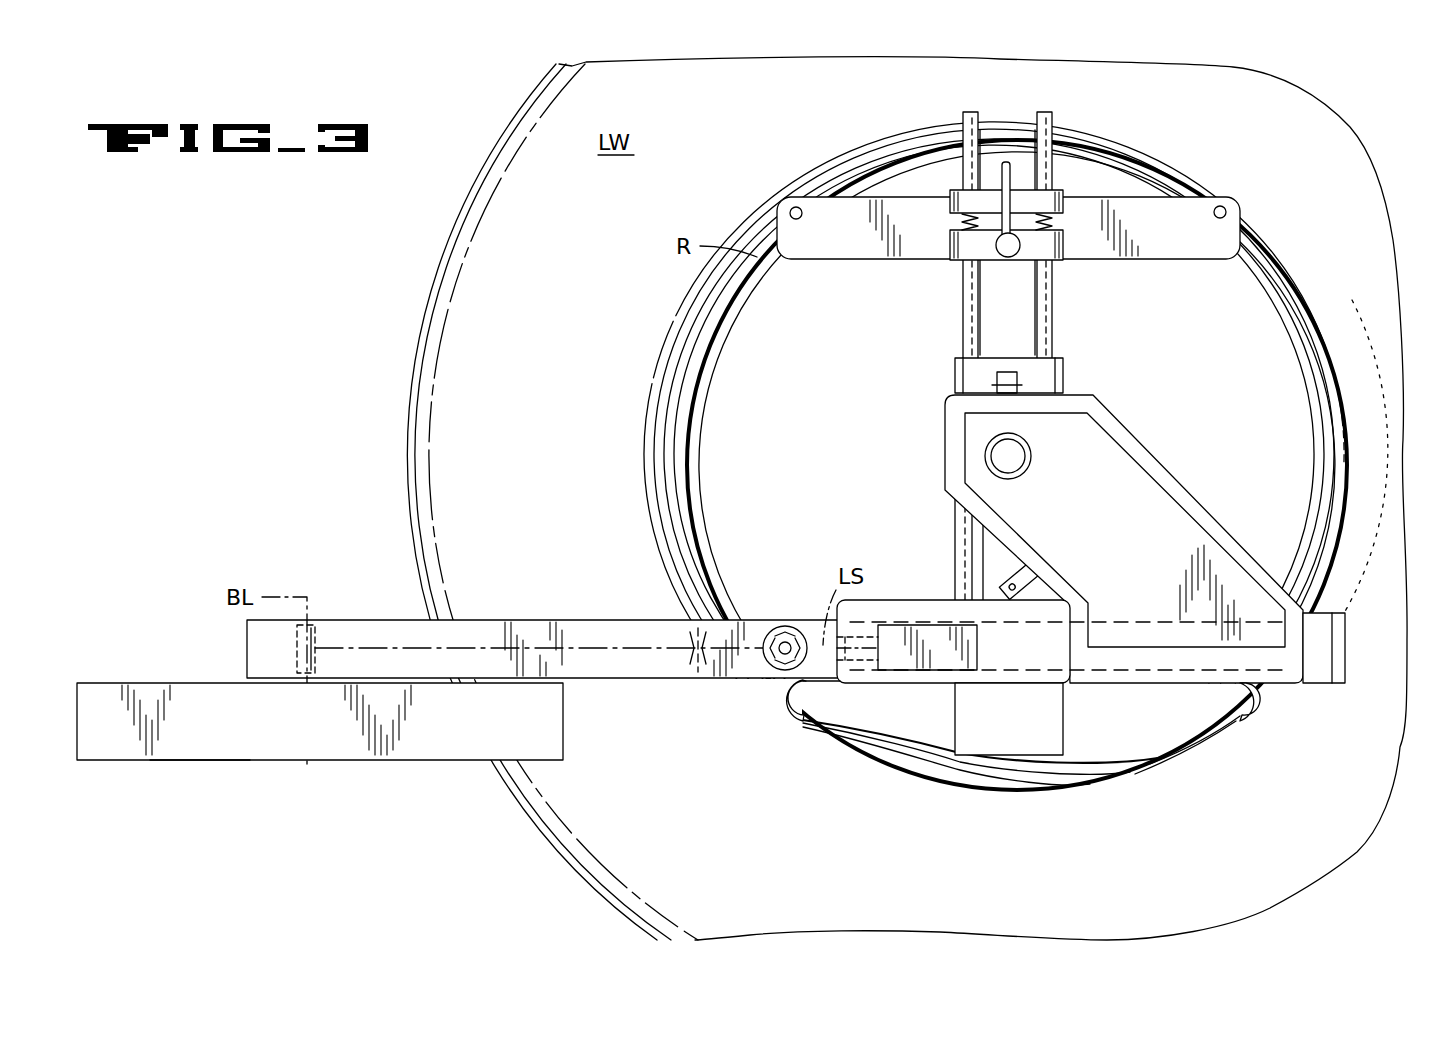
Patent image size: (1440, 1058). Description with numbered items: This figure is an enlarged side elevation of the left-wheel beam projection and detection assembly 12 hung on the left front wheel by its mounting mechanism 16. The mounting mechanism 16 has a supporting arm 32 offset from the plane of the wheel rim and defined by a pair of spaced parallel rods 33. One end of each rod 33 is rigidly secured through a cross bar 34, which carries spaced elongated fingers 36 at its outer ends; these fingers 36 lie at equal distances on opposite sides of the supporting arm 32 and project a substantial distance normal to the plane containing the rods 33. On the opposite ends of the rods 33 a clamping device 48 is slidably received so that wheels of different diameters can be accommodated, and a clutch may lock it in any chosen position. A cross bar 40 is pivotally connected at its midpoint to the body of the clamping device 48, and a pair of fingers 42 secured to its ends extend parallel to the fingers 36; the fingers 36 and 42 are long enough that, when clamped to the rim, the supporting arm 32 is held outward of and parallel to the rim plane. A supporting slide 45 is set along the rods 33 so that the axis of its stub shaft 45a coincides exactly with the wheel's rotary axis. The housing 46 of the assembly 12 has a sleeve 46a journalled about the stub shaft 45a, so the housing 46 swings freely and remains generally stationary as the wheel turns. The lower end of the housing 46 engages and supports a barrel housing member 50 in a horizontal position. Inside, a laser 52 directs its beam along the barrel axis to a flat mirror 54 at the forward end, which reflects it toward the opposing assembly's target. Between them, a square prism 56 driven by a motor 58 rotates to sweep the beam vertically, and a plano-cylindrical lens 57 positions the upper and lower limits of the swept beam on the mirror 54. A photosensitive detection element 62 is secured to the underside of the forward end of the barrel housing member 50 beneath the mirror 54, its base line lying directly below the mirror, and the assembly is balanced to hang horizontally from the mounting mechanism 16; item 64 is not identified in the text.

The beam projection and detection assembly 12 is at (624, 535).
The mounting mechanism 16 is at (1014, 357).
The supporting arm 32 is at (960, 284).
The rods 33 is at (1043, 285).
The cross bar 34 is at (1000, 756).
The fingers 36 is at (790, 724).
The cross bar 40 is at (1014, 225).
The fingers 42 is at (790, 198).
The supporting slide 45 is at (1063, 361).
The stub shaft 45a is at (1014, 450).
The housing 46 is at (1124, 539).
The sleeve 46a is at (1028, 462).
The clamping device 48 is at (1055, 258).
The barrel housing member 50 is at (547, 629).
The laser 52 is at (984, 672).
The mirror 54 is at (318, 630).
The prism 56 is at (790, 624).
The plano-cylindrical lens 57 is at (697, 688).
The motor 58 is at (775, 655).
The photosensitive detection element 62 is at (196, 683).
The plate edge 64 is at (197, 755).